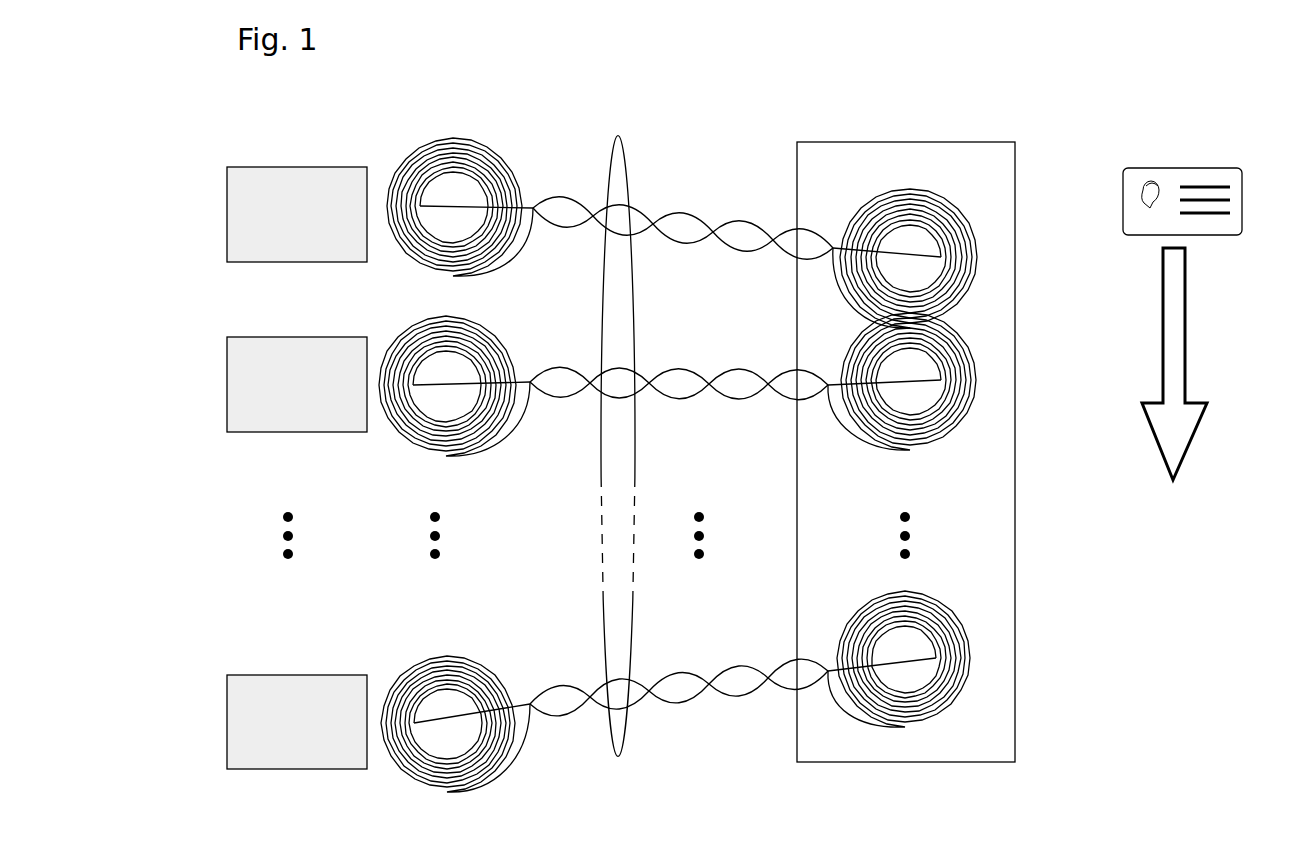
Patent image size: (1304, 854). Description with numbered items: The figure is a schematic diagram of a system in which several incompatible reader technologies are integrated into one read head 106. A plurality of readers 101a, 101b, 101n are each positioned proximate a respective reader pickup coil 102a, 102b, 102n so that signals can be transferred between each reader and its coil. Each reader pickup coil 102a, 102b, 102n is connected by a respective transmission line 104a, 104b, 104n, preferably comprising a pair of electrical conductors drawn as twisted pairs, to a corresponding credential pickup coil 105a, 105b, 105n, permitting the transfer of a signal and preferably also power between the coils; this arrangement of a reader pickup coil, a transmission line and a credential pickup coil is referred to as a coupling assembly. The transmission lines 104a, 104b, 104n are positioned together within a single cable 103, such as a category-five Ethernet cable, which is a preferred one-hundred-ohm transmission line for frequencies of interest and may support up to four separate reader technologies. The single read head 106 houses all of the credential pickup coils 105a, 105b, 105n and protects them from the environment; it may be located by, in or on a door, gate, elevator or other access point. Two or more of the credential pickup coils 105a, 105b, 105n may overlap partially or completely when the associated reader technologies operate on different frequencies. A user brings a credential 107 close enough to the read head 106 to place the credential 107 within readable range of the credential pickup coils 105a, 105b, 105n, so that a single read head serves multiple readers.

The reader 101a is at (299, 162).
The reader 101b is at (299, 332).
The reader 101n is at (299, 670).
The reader pickup coil 102a is at (463, 128).
The reader pickup coil 102b is at (440, 318).
The reader pickup coil 102n is at (428, 654).
The cable 103 is at (619, 133).
The transmission line 104a is at (738, 213).
The transmission line 104b is at (738, 362).
The transmission line 104n is at (736, 660).
The credential pickup coil 105a is at (969, 208).
The credential pickup coil 105b is at (969, 341).
The credential pickup coil 105n is at (969, 604).
The read head 106 is at (950, 133).
The credential 107 is at (1188, 165).